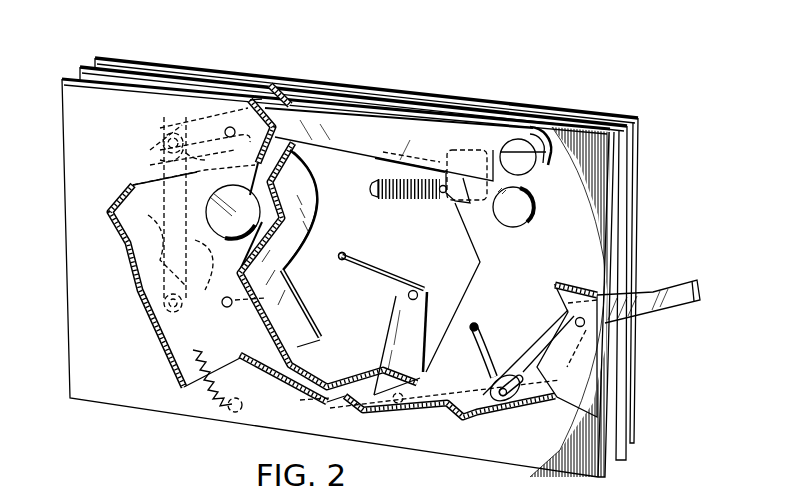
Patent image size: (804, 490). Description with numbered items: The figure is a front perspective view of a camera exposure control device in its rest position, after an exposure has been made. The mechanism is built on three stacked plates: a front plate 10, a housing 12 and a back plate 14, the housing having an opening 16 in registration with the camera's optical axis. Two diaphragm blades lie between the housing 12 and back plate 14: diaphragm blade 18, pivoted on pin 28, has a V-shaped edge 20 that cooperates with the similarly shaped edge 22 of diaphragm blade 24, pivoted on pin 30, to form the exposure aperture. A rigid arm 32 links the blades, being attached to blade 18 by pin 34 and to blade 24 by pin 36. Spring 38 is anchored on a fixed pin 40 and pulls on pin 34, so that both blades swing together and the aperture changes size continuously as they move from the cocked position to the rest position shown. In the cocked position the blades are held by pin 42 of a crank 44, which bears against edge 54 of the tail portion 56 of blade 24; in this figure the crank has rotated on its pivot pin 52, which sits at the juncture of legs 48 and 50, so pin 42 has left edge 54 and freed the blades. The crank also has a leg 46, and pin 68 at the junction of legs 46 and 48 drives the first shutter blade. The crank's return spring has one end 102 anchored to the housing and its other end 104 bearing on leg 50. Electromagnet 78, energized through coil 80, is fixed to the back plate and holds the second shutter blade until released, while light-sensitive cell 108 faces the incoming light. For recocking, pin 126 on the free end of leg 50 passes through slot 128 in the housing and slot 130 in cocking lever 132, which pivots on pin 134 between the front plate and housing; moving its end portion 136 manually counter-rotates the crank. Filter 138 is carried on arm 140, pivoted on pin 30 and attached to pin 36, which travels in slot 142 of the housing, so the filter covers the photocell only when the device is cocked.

The front plate 10 is at (72, 133).
The housing 12 is at (80, 67).
The back plate 14 is at (103, 57).
The opening 16 is at (228, 242).
The diaphragm blade 18 is at (128, 238).
The V-shaped edge 20 is at (233, 212).
The edge 22 is at (240, 200).
The diaphragm blade 24 is at (302, 170).
The pin 28 is at (226, 308).
The pin 30 is at (225, 128).
The rigid arm 32 is at (190, 173).
The pin 34 is at (147, 338).
The pin 36 is at (170, 155).
The spring 38 is at (188, 352).
The fixed pin 40 is at (243, 403).
The pin 42 is at (340, 255).
The crank element 44 is at (433, 327).
The leg portion 46 is at (352, 264).
The leg portion 48 is at (400, 315).
The leg portion 50 is at (450, 420).
The pin 52 is at (380, 408).
The edge 54 is at (298, 305).
The tail portion 56 is at (306, 332).
The pin 68 is at (418, 292).
The electromagnet 78 is at (450, 208).
The coil 80 is at (392, 195).
The end of coil spring 102 is at (335, 405).
The end of coil spring 104 is at (474, 388).
The light-sensitive cell 108 is at (518, 213).
The pin 126 is at (497, 400).
The slot 128 is at (478, 334).
The slot 130 is at (507, 380).
The cocking lever 132 is at (643, 310).
The pin 134 is at (580, 328).
The end portion 136 is at (704, 283).
The filter 138 is at (536, 168).
The arm 140 is at (375, 125).
The slot 142 is at (168, 127).